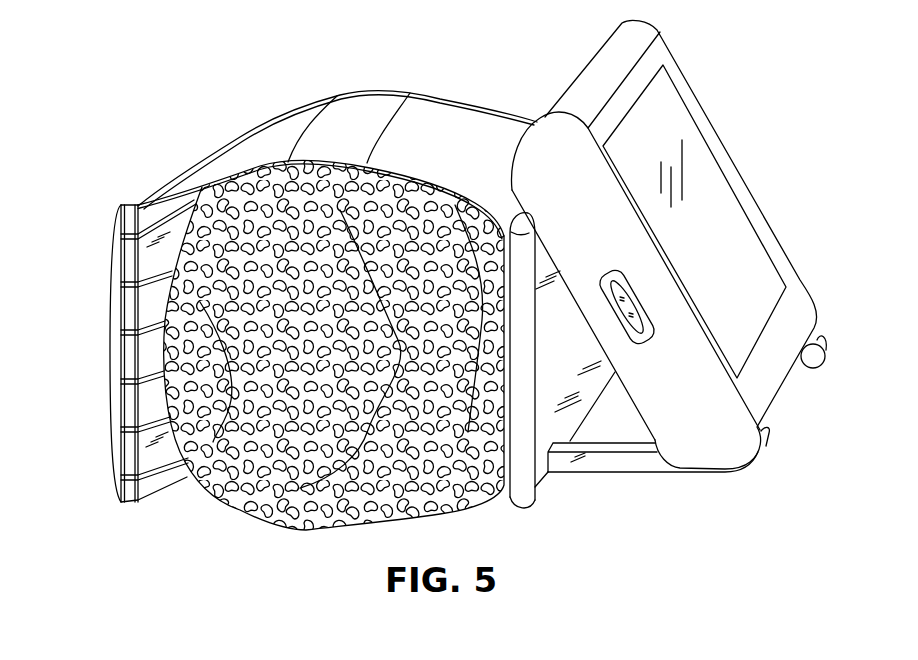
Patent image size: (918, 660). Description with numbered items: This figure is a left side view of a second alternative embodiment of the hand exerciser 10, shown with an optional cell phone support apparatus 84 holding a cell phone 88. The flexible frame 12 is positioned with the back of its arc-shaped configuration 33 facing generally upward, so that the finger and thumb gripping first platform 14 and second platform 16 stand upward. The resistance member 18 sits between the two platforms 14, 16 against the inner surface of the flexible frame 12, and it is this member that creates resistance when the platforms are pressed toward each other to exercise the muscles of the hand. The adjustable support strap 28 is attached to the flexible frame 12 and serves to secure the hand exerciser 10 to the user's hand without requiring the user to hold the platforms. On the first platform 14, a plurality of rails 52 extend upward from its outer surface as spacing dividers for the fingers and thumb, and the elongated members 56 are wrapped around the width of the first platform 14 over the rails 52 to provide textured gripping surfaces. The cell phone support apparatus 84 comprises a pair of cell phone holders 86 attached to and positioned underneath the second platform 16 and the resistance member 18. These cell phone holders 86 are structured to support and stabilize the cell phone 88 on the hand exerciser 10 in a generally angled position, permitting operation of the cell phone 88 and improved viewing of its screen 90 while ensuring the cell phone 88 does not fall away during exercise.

The hand exerciser 10 is at (186, 71).
The flexible frame 12 is at (435, 117).
The first platform 14 is at (143, 195).
The second platform 16 is at (515, 487).
The resistance member 18 is at (273, 463).
The adjustable support strap 28 is at (349, 108).
The arc-shaped configuration 33 is at (517, 92).
The rails 52 is at (112, 360).
The elongated members 56 is at (110, 427).
The cell phone support apparatus 84 is at (684, 485).
The cell phone holders 86 is at (824, 362).
The cell phone 88 is at (641, 58).
The screen 90 is at (732, 240).